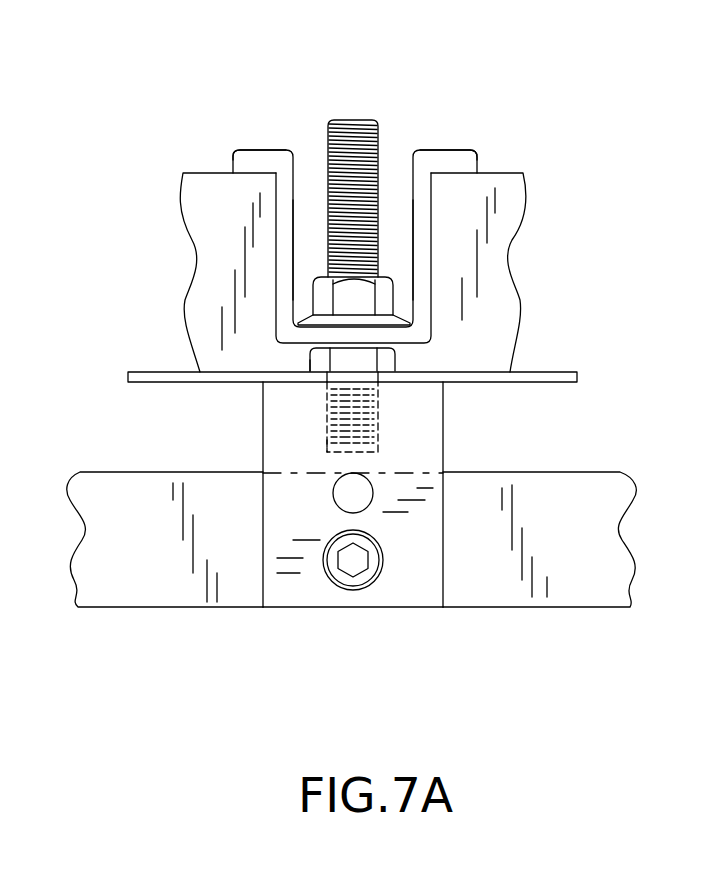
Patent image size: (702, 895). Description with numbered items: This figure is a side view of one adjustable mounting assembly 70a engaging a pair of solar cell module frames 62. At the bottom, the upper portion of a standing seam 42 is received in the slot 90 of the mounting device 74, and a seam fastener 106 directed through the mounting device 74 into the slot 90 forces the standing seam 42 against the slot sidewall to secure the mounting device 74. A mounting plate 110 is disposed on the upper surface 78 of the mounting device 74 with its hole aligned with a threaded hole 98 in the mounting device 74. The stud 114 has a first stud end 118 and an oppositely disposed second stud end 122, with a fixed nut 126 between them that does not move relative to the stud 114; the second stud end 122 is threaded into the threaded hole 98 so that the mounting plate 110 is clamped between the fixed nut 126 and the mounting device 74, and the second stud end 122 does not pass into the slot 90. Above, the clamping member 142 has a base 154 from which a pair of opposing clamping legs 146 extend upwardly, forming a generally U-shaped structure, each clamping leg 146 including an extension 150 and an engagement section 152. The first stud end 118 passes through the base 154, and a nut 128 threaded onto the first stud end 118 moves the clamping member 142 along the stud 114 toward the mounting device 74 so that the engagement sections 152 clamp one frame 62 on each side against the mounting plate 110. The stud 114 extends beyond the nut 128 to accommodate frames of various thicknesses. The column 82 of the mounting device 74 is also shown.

The mounting assembly 70a is at (541, 117).
The stud 114 is at (382, 157).
The first stud end 118 is at (350, 120).
The clamping member 142 is at (413, 150).
The clamping legs 146 is at (253, 138).
The engagement section 152 is at (238, 165).
The extension 150 is at (287, 282).
The nut 128 is at (315, 278).
The solar cell module frame 62 is at (183, 315).
The base 154 is at (375, 337).
The fixed nut 126 is at (300, 357).
The mounting plate 110 is at (572, 372).
The upper surface 78 is at (400, 378).
The threaded hole 98 is at (375, 405).
The second stud end 122 is at (343, 455).
The column 82 is at (283, 603).
The slot 90 is at (270, 480).
The standing seam 42 is at (80, 472).
The mounting device 74 is at (418, 608).
The seam fastener 106 is at (352, 570).